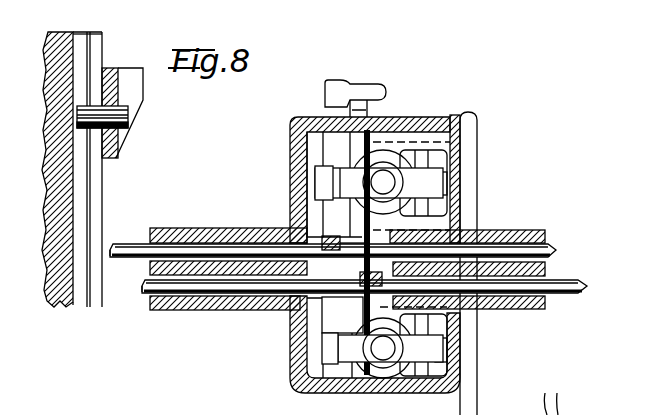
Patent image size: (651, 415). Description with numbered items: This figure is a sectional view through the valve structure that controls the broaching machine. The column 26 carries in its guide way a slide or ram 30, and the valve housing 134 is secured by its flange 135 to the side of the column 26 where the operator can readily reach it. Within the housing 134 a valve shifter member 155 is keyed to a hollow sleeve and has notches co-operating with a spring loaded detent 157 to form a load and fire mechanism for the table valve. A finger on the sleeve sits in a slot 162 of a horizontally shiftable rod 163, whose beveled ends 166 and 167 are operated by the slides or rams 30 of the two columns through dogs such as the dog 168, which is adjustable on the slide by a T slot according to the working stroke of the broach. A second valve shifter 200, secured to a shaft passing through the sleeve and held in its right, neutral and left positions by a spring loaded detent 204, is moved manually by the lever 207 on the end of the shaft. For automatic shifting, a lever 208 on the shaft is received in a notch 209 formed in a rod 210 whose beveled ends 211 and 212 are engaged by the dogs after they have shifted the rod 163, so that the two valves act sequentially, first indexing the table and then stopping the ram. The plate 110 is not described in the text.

The slide or ram 30 is at (60, 305).
The plate 110 is at (80, 52).
The dog 168 is at (133, 98).
The beveled end of rod 166 is at (114, 243).
The horizontally shiftable rod 163 is at (134, 247).
The beveled end of rod 167 is at (552, 243).
The rod 210 is at (558, 302).
The beveled end of rod 212 is at (582, 287).
The beveled end of rod 211 is at (147, 281).
The flange 135 is at (477, 122).
The valve housing 134 is at (303, 383).
The manually operable lever 207 is at (370, 88).
The spring loaded detent 157 is at (433, 186).
The valve shifter member 155 is at (318, 183).
The slot 162 is at (330, 242).
The lever 208 is at (318, 305).
The notch 209 is at (352, 302).
The spring loaded detent 204 is at (433, 348).
The valve shifter 200 is at (333, 348).
The column 26 is at (528, 392).